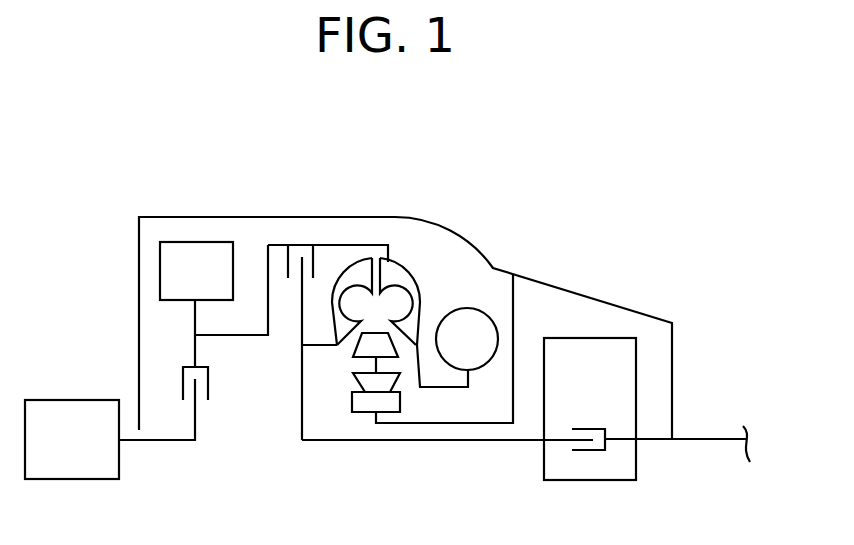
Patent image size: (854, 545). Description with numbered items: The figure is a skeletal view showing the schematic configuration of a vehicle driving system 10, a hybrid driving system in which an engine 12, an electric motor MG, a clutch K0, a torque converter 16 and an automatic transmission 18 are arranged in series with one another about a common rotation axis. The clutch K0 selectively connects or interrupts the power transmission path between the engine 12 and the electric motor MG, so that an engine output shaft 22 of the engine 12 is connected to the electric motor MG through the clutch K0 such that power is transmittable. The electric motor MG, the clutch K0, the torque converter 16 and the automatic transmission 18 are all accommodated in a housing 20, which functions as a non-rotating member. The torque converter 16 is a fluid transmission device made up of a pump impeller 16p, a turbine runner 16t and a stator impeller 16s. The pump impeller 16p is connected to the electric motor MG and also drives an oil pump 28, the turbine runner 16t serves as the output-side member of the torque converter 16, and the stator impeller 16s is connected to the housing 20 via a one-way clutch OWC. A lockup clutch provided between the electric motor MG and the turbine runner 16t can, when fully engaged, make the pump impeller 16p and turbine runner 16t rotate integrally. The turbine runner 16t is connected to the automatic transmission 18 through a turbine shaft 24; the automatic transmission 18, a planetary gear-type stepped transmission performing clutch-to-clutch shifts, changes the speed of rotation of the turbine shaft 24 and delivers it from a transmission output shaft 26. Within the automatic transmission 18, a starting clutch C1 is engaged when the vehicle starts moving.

The vehicle driving system 10 is at (553, 207).
The engine 12 is at (74, 418).
The torque converter 16 is at (398, 230).
The turbine runner 16t is at (340, 247).
The pump impeller 16p is at (406, 293).
The stator impeller 16s is at (366, 343).
The automatic transmission 18 is at (600, 337).
The housing 20 is at (227, 216).
The engine output shaft 22 is at (145, 443).
The turbine shaft 24 is at (422, 443).
The transmission output shaft 26 is at (683, 440).
The oil pump 28 is at (473, 318).
The electric motor MG is at (160, 236).
The clutch K0 is at (208, 382).
The one-way clutch OWC is at (343, 416).
The starting clutch C1 is at (589, 454).